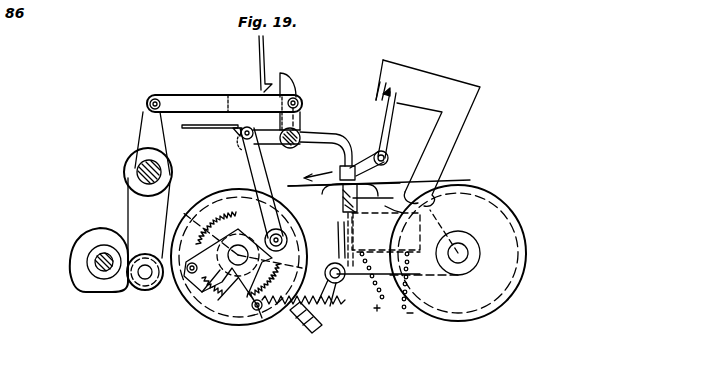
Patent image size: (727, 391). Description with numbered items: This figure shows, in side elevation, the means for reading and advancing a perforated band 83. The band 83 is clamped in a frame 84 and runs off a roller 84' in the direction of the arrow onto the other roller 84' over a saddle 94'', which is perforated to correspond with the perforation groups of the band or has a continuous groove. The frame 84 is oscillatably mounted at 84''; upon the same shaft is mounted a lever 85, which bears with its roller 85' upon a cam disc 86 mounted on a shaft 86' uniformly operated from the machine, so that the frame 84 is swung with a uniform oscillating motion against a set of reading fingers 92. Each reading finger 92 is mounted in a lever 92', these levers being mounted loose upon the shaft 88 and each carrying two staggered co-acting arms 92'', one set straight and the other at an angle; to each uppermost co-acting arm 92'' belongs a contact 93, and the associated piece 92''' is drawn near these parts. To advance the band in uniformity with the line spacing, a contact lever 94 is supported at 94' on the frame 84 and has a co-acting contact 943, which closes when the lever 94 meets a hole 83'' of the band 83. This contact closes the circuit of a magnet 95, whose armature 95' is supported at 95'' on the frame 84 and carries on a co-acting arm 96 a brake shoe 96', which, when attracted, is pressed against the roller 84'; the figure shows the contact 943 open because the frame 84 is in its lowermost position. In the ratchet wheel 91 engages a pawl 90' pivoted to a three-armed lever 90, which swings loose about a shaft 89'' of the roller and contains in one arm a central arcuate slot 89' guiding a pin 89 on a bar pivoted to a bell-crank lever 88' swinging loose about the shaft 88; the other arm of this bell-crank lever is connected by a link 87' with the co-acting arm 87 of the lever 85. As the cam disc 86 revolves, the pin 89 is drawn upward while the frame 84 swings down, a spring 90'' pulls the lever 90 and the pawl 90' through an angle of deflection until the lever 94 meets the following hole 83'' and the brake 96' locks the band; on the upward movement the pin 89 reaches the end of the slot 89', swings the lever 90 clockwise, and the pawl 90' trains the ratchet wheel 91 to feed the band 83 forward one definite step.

The band 83 is at (428, 133).
The hole 83'' is at (345, 199).
The frame 84 is at (239, 232).
The roller 84' is at (372, 268).
The mounting of frame 84'' is at (133, 172).
The lever 85 is at (136, 221).
The roller 85' is at (144, 287).
The cam disc 86 is at (92, 267).
The shaft 86' is at (104, 275).
The co-acting arm 87 is at (144, 143).
The link 87' is at (224, 93).
The shaft 88 is at (270, 187).
The bell-crank lever 88' is at (310, 116).
The pin 89 is at (326, 274).
The central arcuate slot 89' is at (258, 225).
The shaft 89'' is at (207, 314).
The three-armed lever 90 is at (243, 269).
The pawl 90' is at (196, 302).
The spring 90'' is at (271, 325).
The ratchet wheel 91 is at (232, 239).
The reading fingers 92 is at (367, 148).
The lever 92' is at (331, 146).
The co-acting arms 92'' is at (237, 145).
The cam 92''' is at (293, 91).
The contact 93 is at (256, 63).
The contact lever 94 is at (393, 131).
The support of contact lever 94' is at (399, 154).
The saddle 94'' is at (378, 206).
The co-acting contact 943 is at (402, 82).
The magnet 95 is at (378, 263).
The armature 95' is at (335, 240).
The support of armature 95'' is at (353, 279).
The co-acting arm 96 is at (309, 310).
The brake shoe 96' is at (301, 328).